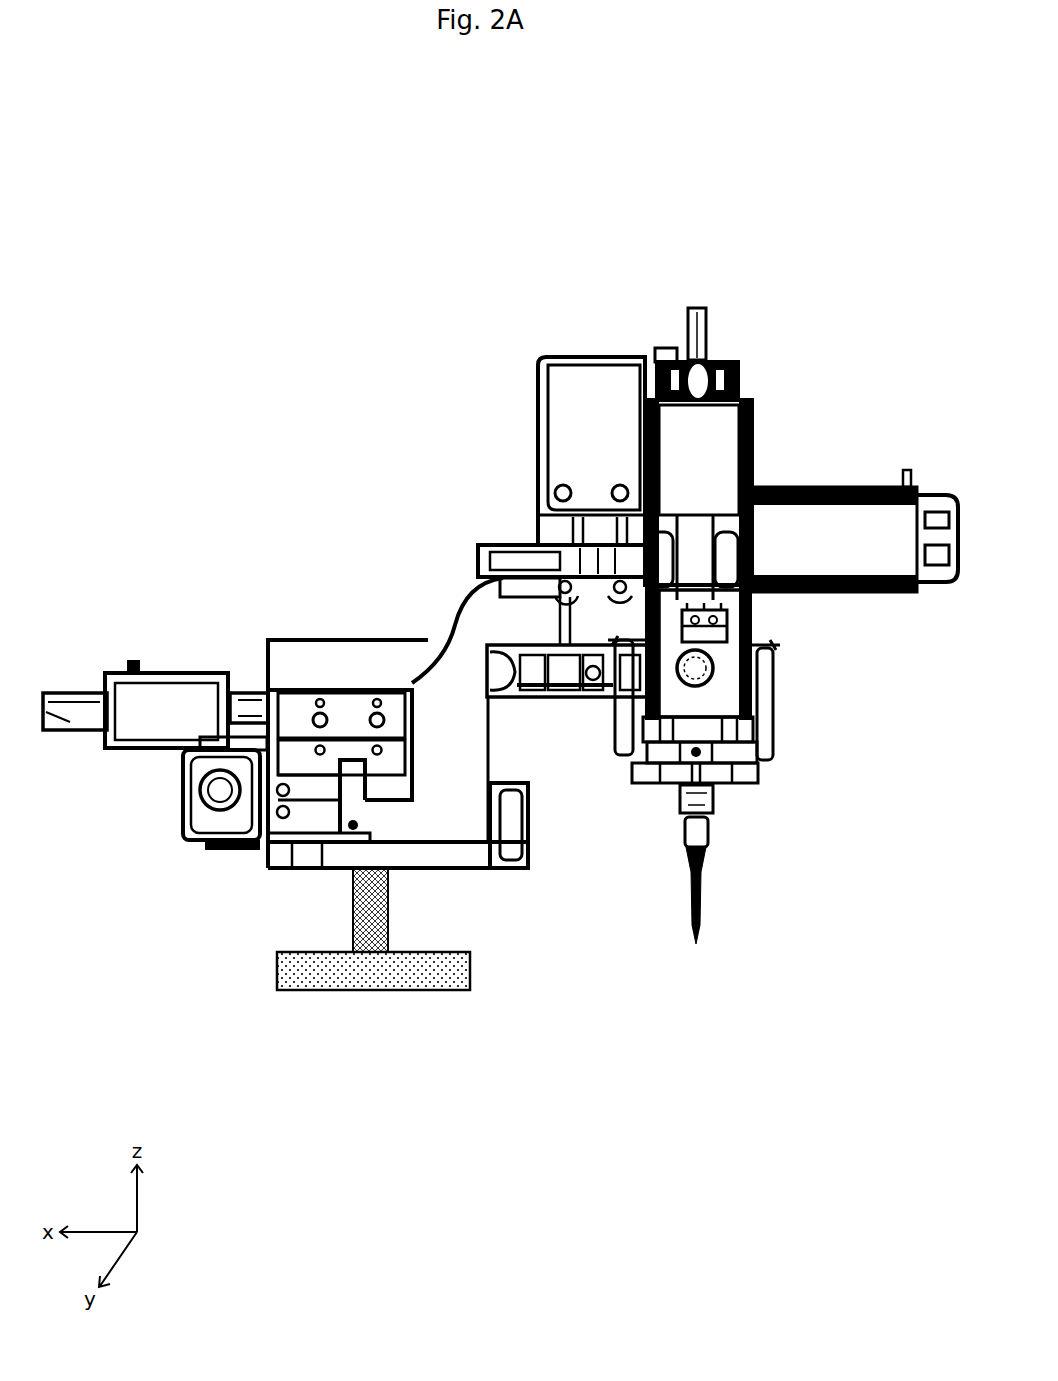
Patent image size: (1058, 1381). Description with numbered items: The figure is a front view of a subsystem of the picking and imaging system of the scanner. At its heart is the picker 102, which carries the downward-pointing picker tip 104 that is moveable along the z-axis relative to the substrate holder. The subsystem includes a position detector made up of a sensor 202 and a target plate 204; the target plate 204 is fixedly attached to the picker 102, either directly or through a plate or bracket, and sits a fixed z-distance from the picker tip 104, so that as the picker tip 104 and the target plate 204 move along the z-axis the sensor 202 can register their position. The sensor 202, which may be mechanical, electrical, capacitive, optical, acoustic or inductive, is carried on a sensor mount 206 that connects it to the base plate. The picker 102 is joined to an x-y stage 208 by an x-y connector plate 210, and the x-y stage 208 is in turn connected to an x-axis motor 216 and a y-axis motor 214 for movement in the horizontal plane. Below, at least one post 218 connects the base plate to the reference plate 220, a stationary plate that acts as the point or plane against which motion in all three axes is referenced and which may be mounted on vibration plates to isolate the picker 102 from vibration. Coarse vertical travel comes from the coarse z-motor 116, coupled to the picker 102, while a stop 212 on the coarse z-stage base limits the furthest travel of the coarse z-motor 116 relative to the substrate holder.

The picker 102 is at (787, 427).
The picker tip 104 is at (705, 925).
The coarse z-motor 116 is at (878, 592).
The sensor 202 is at (488, 589).
The target plate 204 is at (480, 546).
The sensor mount 206 is at (482, 750).
The x-y stage 208 is at (250, 695).
The x-y connector plate 210 is at (323, 640).
The stop 212 is at (537, 405).
The y-axis motor 214 is at (130, 660).
The x-axis motor 216 is at (168, 810).
The post 218 is at (390, 905).
The reference plate 220 is at (470, 970).